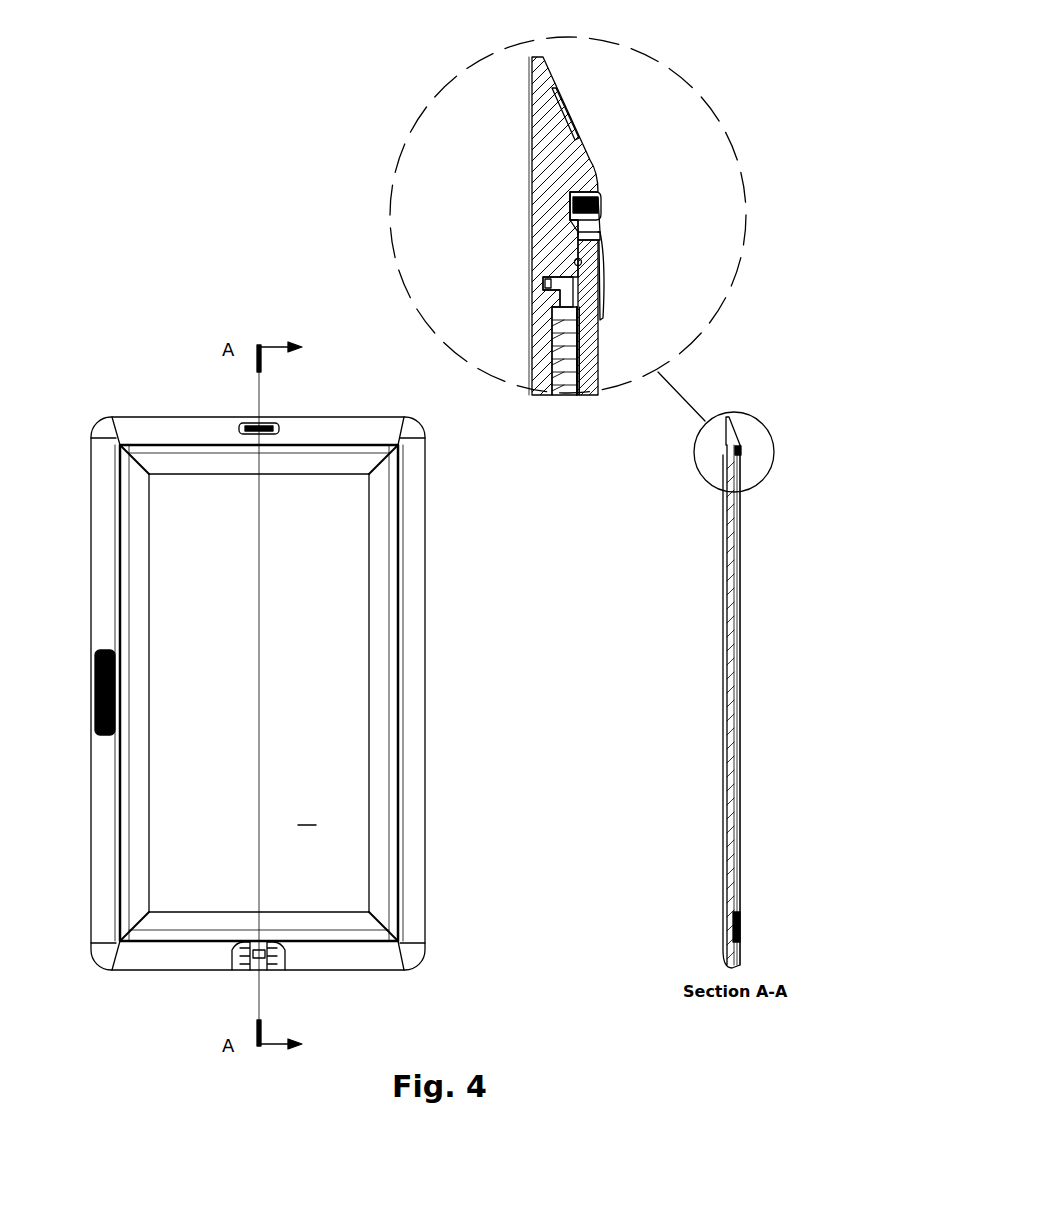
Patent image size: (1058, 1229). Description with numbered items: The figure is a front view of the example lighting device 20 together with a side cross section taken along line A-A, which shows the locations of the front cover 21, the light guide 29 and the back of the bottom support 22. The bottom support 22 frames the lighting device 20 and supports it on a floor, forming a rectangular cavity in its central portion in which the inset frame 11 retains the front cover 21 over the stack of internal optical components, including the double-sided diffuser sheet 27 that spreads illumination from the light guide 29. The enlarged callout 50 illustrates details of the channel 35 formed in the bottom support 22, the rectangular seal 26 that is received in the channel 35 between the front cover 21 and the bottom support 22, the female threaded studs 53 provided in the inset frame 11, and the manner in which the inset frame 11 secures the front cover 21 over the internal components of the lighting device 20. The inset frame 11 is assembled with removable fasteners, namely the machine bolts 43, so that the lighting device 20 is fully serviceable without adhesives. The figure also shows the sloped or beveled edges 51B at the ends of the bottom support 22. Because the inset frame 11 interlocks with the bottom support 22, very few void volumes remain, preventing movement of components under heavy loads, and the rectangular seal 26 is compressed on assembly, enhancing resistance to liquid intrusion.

The callout 50 is at (641, 106).
The sloped/beveled edges 51B is at (590, 155).
The female threaded studs 53 is at (593, 203).
The bottom support 22 is at (530, 190).
The machine bolts 43 is at (572, 210).
The inset frame 11 is at (603, 250).
The channel 35 is at (573, 262).
The rectangular seal 26 is at (583, 263).
The double-sided diffuser sheet 27 is at (577, 360).
The light guide 29 is at (560, 393).
The front cover 21 is at (595, 385).
The lighting device 20 is at (460, 598).